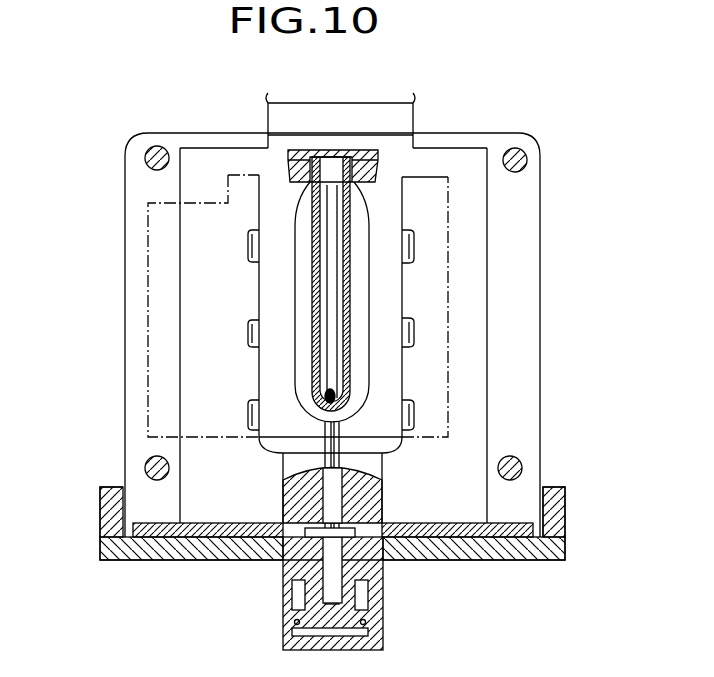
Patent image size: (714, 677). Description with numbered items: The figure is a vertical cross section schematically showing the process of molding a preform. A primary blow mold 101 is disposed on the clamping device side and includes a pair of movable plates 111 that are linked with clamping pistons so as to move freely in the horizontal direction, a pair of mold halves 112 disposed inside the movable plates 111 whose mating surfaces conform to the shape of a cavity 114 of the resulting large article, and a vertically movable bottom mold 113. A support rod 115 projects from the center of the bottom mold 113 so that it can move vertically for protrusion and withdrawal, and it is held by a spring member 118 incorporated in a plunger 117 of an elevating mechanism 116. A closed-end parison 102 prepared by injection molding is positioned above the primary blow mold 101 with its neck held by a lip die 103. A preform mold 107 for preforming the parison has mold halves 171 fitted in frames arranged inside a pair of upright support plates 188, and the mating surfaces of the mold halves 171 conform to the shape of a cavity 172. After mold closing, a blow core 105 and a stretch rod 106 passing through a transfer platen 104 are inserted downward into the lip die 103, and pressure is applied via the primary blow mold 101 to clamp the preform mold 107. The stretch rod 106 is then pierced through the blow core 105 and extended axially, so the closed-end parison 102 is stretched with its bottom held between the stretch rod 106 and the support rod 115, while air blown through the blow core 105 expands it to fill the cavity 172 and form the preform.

The primary blow mold 101 is at (462, 146).
The closed-end parison 102 is at (313, 230).
The lip die 103 is at (287, 165).
The transfer platen 104 is at (355, 113).
The blow core 105 is at (420, 178).
The stretch rod 106 is at (332, 312).
The preform mold 107 is at (251, 283).
The movable plates 111 is at (513, 238).
The mold halves 112 is at (460, 308).
The bottom mold 113 is at (367, 483).
The cavity 114 is at (407, 278).
The support rod 115 is at (290, 470).
The elevating mechanism 116 is at (283, 632).
The plunger 117 is at (347, 568).
The spring member 118 is at (348, 592).
The mold halves 171 is at (384, 377).
The cavity 172 is at (309, 366).
The support plates 188 is at (450, 220).